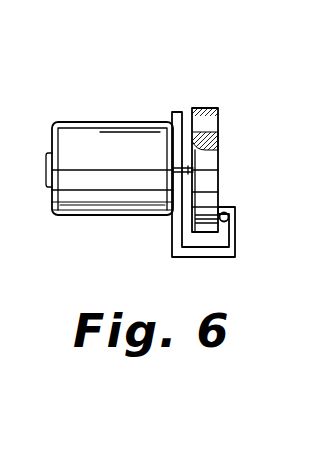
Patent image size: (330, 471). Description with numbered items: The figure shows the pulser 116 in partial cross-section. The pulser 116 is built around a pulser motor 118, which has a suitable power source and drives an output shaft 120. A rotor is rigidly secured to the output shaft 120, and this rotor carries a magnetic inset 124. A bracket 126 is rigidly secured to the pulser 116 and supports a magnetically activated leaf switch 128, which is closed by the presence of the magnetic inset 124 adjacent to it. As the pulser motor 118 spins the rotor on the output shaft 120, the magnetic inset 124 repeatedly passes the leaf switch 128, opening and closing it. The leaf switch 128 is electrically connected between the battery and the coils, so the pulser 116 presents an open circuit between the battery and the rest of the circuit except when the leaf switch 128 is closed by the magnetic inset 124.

The pulser 116 is at (118, 111).
The pulser motor 118 is at (107, 208).
The output shaft 120 is at (193, 169).
The magnetic inset 124 is at (207, 123).
The bracket 126 is at (205, 251).
The magnetically activated leaf switch 128 is at (229, 217).